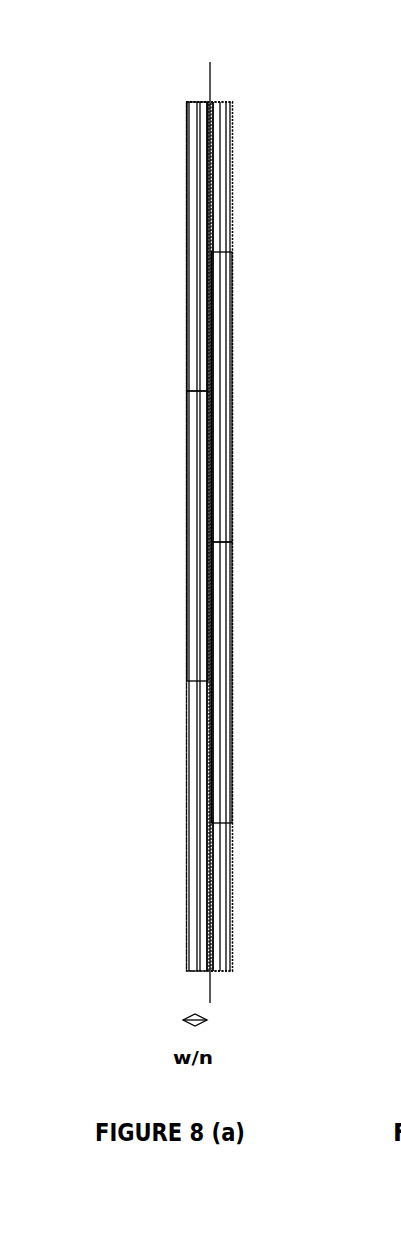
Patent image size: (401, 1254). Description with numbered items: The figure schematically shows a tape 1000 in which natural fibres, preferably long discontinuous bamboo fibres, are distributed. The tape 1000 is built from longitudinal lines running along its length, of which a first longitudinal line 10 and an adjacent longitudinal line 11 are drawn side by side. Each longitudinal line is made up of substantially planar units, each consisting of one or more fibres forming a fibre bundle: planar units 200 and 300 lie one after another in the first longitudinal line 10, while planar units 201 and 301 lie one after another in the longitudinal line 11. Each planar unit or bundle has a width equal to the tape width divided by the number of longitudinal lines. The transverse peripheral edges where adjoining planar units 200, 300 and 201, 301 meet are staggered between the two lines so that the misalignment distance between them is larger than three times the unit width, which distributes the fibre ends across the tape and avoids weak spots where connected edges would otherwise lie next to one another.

The tape 1000 is at (173, 125).
The first longitudinal line 10 is at (197, 100).
The longitudinal line 11 is at (218, 100).
The substantially planar unit 200 is at (173, 275).
The substantially planar unit 201 is at (239, 395).
The substantially planar unit 300 is at (173, 509).
The substantially planar unit 301 is at (243, 746).